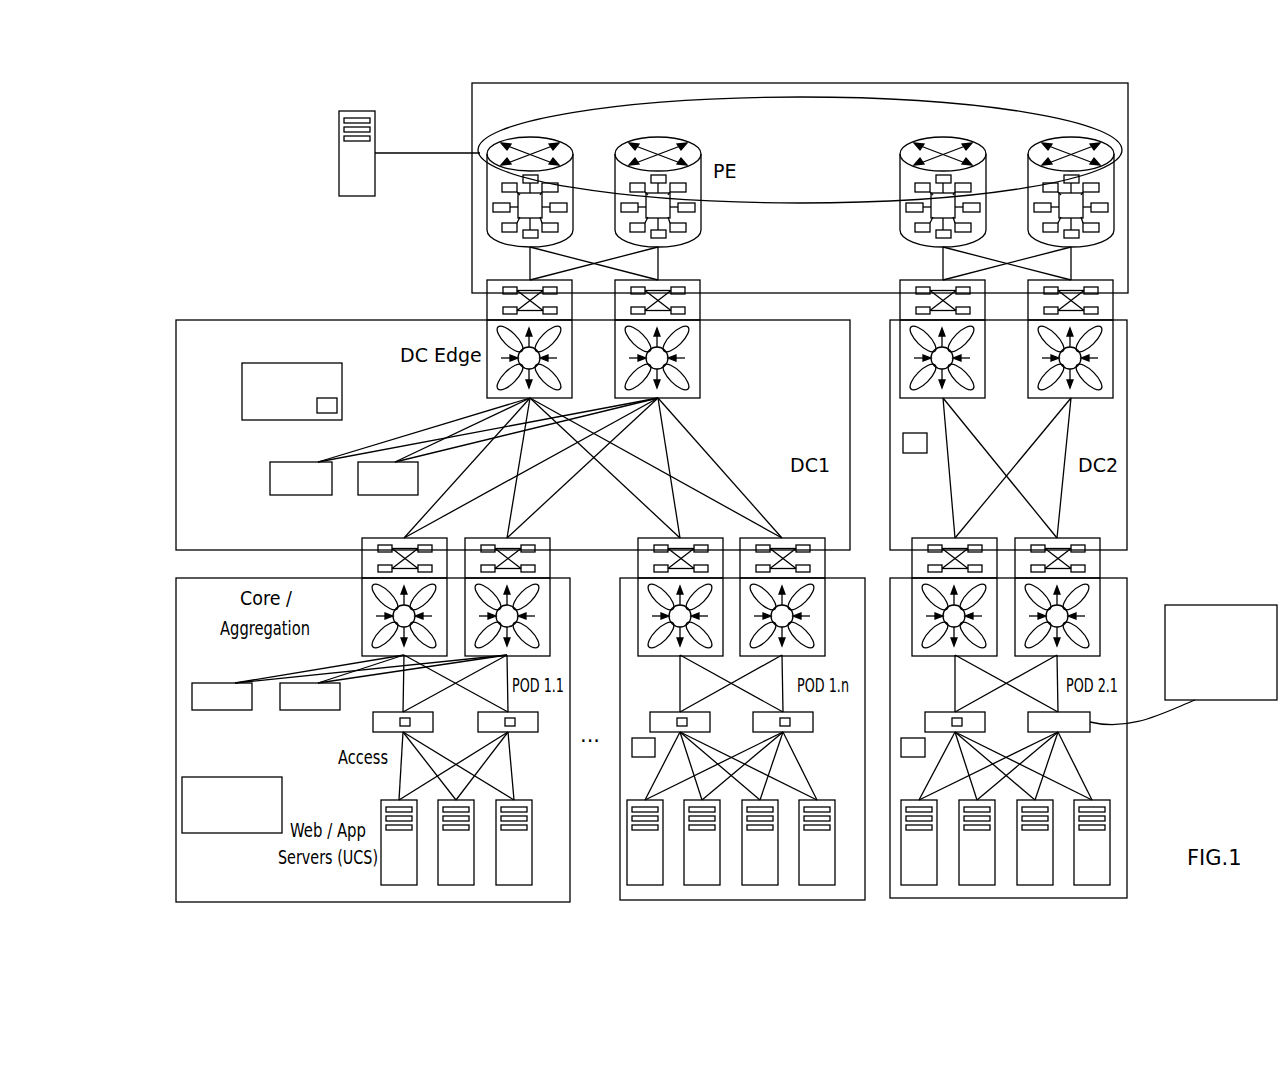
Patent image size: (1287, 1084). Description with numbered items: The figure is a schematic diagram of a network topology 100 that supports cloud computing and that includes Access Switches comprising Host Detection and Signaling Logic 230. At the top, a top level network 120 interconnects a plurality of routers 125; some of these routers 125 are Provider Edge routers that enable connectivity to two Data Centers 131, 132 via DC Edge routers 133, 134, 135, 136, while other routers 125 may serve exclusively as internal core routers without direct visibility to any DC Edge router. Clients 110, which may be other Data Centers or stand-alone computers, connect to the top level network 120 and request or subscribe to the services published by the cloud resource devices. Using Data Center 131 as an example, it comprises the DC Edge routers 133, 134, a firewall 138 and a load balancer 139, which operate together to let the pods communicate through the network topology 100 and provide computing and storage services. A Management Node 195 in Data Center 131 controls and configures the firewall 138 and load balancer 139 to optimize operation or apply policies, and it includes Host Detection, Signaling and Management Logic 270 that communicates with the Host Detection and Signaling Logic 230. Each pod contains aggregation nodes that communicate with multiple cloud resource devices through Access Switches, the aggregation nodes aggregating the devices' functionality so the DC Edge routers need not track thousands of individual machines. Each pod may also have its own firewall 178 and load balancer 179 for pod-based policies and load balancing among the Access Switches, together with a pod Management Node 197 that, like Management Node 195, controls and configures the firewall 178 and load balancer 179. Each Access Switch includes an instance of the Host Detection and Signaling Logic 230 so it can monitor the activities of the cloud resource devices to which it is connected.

The network topology 100 is at (1163, 172).
The clients 110 is at (339, 172).
The top level network 120 is at (1127, 272).
The routers 125 is at (573, 170).
The Data Center 131 is at (176, 405).
The Data Center 132 is at (1127, 445).
The DC Edge router 133 is at (487, 305).
The DC Edge router 134 is at (700, 345).
The DC Edge router 135 is at (900, 300).
The DC Edge router 136 is at (1113, 305).
The firewall 138 is at (270, 478).
The load balancer 139 is at (380, 495).
The firewall 178 is at (230, 710).
The load balancer 179 is at (312, 710).
The Management Node 195 is at (292, 363).
The Management Node 197 is at (232, 833).
The Host Detection and Signaling Logic 230 is at (1207, 605).
The Host Detection, Signaling and Management Logic 270 is at (327, 413).